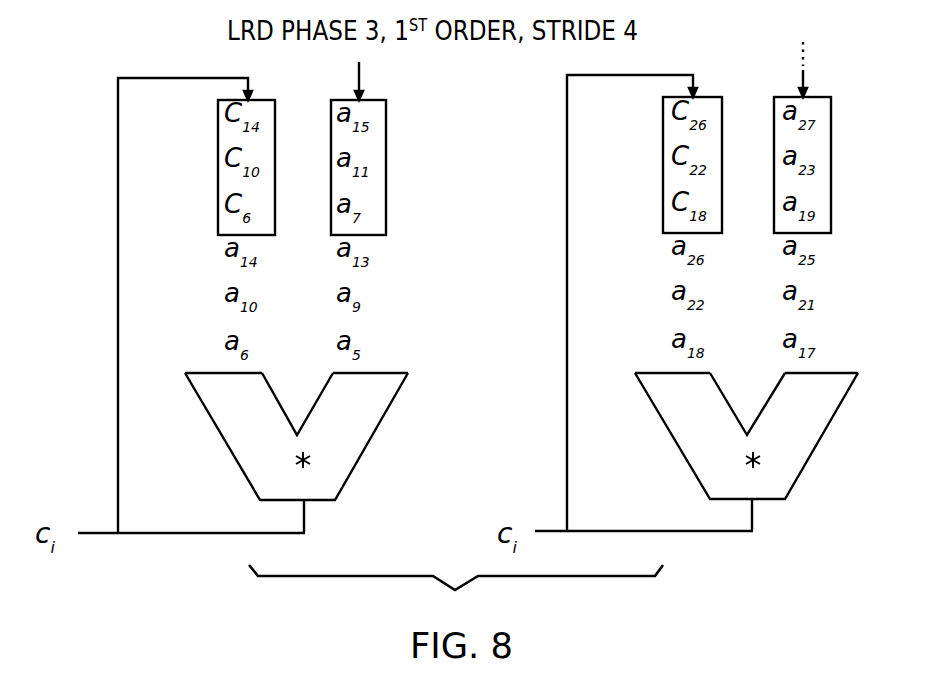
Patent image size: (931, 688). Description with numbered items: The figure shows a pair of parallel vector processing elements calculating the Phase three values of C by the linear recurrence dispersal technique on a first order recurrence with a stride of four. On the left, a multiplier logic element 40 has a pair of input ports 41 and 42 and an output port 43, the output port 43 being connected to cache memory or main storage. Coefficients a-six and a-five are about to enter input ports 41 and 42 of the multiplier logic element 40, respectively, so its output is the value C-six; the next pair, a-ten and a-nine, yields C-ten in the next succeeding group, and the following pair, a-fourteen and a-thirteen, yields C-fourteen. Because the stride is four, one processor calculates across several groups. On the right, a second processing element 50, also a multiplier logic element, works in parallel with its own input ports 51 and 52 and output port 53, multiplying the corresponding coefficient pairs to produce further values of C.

The multiplier logic element 40 is at (205, 481).
The input port 41 is at (213, 373).
The input port 42 is at (383, 373).
The output port 43 is at (312, 502).
The processing element 50 is at (658, 478).
The input port 51 is at (663, 373).
The input port 52 is at (833, 373).
The output port 53 is at (762, 500).